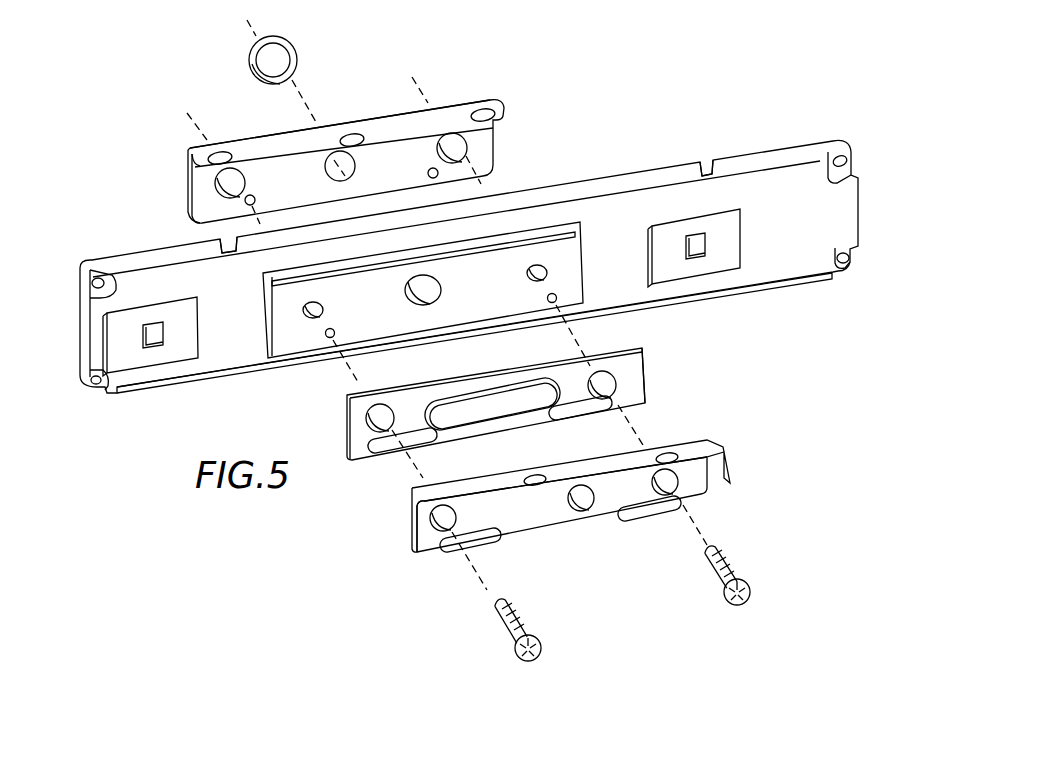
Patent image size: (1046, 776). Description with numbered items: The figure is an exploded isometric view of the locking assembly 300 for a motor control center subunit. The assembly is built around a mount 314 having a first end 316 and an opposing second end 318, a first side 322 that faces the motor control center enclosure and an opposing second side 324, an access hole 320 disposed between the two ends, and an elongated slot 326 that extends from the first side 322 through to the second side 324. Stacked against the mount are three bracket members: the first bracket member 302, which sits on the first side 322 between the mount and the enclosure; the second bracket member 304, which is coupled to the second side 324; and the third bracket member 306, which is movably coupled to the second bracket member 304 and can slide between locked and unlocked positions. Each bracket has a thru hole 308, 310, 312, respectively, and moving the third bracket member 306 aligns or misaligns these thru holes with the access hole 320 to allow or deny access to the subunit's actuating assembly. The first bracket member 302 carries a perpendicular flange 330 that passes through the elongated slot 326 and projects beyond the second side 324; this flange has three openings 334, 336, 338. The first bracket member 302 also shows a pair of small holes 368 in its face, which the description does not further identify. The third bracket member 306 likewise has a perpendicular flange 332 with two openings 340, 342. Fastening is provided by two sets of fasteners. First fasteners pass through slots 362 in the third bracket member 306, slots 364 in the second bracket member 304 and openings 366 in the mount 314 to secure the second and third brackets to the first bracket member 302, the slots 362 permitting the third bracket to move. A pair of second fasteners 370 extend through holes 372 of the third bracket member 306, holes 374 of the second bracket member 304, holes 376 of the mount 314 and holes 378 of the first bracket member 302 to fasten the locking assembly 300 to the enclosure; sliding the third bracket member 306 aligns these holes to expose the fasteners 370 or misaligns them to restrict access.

The locking assembly 300 is at (195, 426).
The first bracket member 302 is at (490, 137).
The second bracket member 304 is at (643, 347).
The third bracket member 306 is at (392, 514).
The thru hole 308 is at (333, 155).
The thru hole 310 is at (493, 395).
The thru hole 312 is at (572, 497).
The mount 314 is at (797, 277).
The first end 316 is at (838, 122).
The second end 318 is at (76, 249).
The access hole 320 is at (440, 293).
The first side 322 is at (767, 143).
The second side 324 is at (637, 200).
The elongated slot 326 is at (512, 247).
The perpendicular flange 330 is at (240, 146).
The perpendicular flange 332 is at (572, 480).
The opening 334 is at (478, 112).
The opening 336 is at (343, 135).
The opening 338 is at (213, 153).
The opening 340 is at (667, 455).
The opening 342 is at (532, 475).
The slot 362 is at (488, 543).
The slot 364 is at (413, 438).
The opening 366 is at (331, 329).
The small hole 368 is at (254, 197).
The second fastener 370 is at (543, 647).
The hole 372 is at (414, 545).
The hole 374 is at (365, 418).
The hole 376 is at (303, 313).
The hole 378 is at (214, 184).